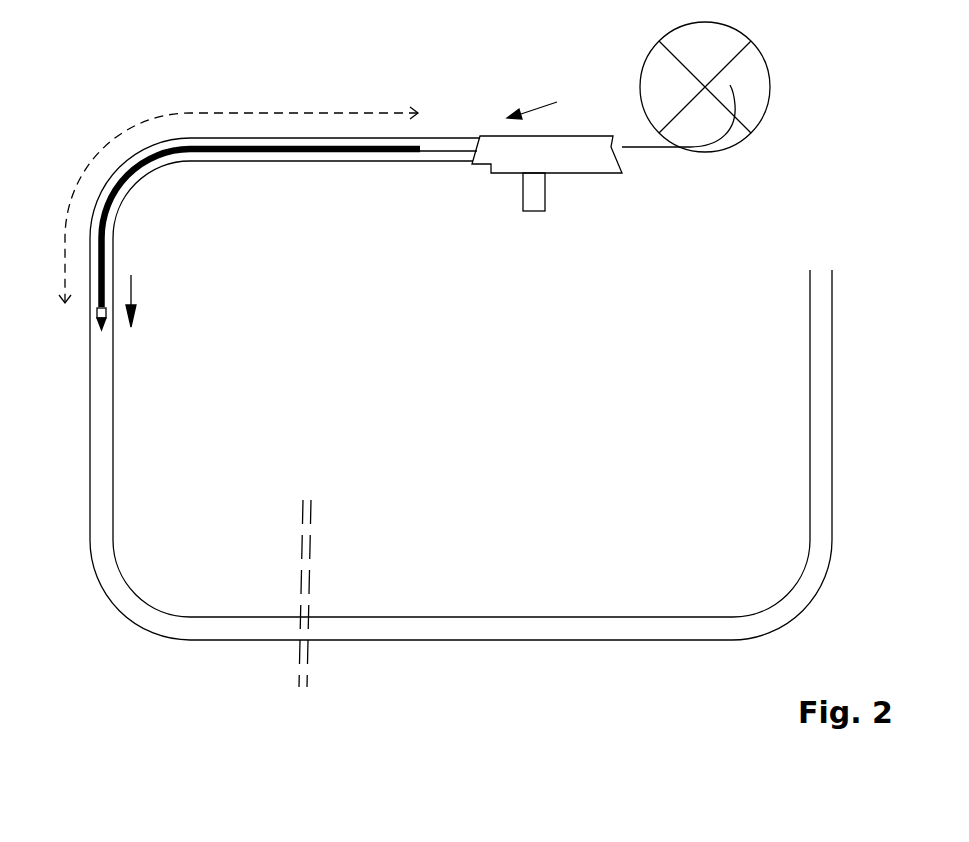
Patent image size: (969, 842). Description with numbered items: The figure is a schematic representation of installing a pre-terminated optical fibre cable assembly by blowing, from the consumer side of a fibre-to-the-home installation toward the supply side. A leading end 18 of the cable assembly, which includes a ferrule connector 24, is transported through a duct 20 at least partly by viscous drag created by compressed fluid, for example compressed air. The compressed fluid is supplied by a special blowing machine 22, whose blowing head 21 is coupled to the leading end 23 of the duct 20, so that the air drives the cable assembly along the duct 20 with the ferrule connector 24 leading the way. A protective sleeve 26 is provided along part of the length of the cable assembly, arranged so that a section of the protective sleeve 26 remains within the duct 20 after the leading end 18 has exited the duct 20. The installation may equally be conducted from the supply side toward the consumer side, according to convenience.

The leading end 18 is at (97, 304).
The duct 20 is at (118, 605).
The blowing head 21 is at (470, 155).
The blowing machine 22 is at (585, 130).
The leading end of the duct 23 is at (470, 150).
The ferrule connector 24 is at (100, 330).
The protective sleeve 26 is at (305, 152).